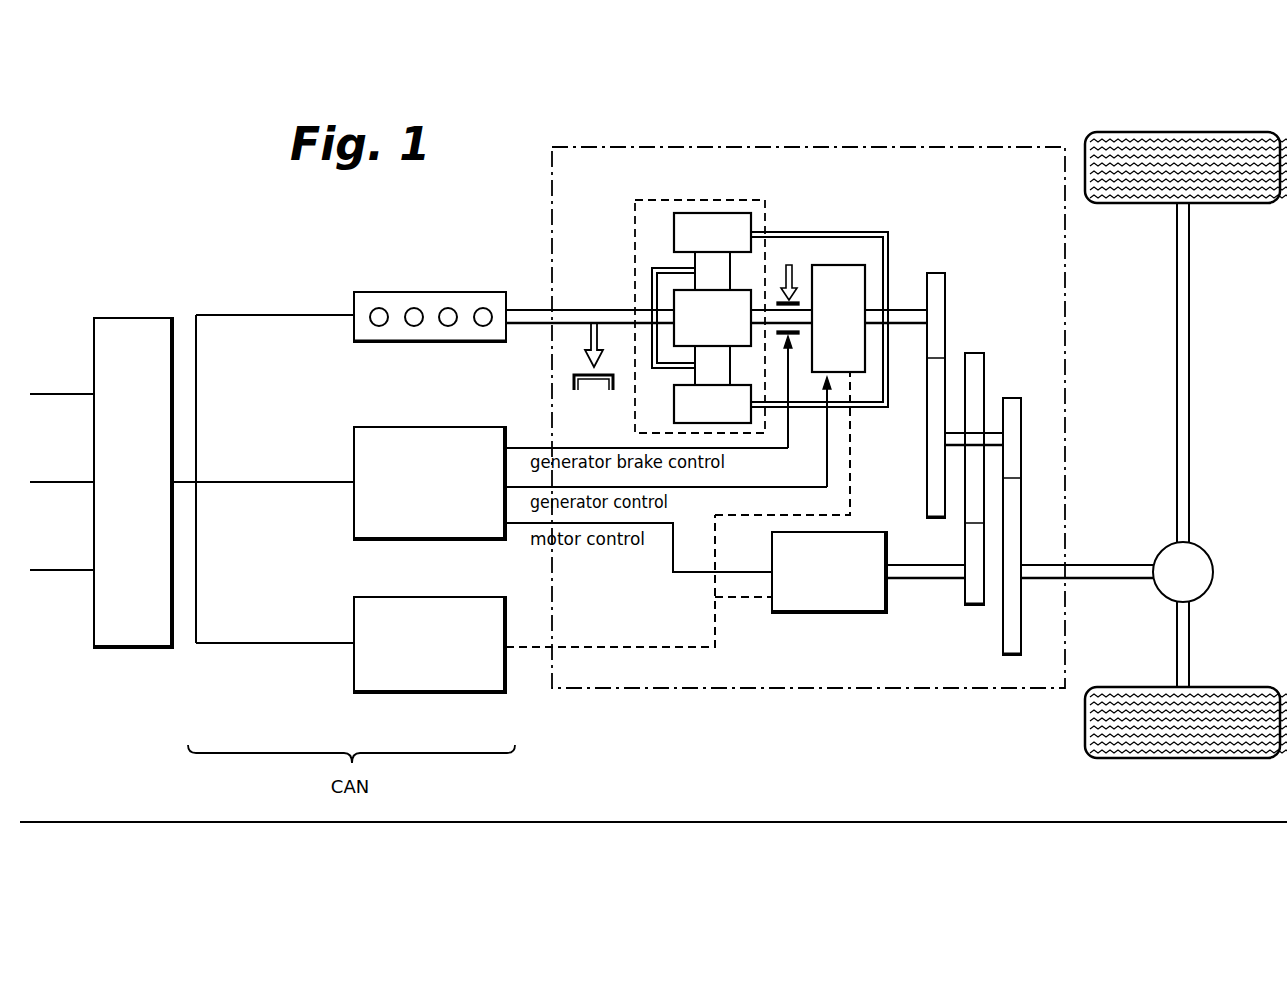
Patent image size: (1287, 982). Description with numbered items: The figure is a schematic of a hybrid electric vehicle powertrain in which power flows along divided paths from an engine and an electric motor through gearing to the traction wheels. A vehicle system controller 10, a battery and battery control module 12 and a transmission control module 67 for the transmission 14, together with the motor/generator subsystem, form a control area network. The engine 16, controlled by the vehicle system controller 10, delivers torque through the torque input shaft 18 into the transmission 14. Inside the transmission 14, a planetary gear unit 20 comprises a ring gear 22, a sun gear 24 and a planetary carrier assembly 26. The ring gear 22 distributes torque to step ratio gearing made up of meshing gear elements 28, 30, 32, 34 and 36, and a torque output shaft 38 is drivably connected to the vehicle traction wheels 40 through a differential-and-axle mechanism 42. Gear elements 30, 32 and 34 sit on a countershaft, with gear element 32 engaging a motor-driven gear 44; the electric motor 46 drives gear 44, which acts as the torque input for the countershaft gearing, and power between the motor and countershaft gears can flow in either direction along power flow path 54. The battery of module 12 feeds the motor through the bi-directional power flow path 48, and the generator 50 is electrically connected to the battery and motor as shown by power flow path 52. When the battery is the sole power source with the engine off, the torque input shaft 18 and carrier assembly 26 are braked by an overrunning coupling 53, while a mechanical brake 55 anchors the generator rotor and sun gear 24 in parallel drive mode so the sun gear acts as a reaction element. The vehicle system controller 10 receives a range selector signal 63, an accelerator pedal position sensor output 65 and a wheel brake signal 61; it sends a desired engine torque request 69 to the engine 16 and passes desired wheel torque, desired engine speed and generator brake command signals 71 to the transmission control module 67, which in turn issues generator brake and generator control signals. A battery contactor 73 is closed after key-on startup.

The vehicle system controller 10 is at (140, 318).
The battery and battery control module 12 is at (450, 693).
The transmission 14 is at (652, 690).
The engine 16 is at (483, 292).
The torque input shaft 18 is at (540, 327).
The planetary gear unit 20 is at (768, 215).
The ring gear 22 is at (674, 232).
The sun gear 24 is at (674, 300).
The planetary carrier assembly 26 is at (652, 280).
The gear element 28 is at (945, 294).
The gear element 30 is at (927, 470).
The gear element 32 is at (984, 372).
The gear element 34 is at (1021, 412).
The gear element 36 is at (1021, 515).
The torque output shaft 38 is at (1122, 580).
The vehicle traction wheels 40 is at (1220, 132).
The differential-and-axle mechanism 42 is at (1200, 572).
The motor-driven gear 44 is at (975, 607).
The electric motor 46 is at (833, 613).
The power flow path 48 is at (698, 645).
The generator 50 is at (865, 272).
The power flow path 52 is at (728, 515).
The overrunning coupling 53 is at (588, 338).
The power flow path 54 is at (738, 600).
The mechanical brake 55 is at (795, 273).
The wheel brake signal 61 is at (75, 574).
The transmission range selector signal 63 is at (75, 398).
The accelerator pedal position sensor output 65 is at (75, 486).
The transmission control module 67 is at (380, 427).
The desired engine torque request 69 is at (270, 318).
The desired wheel torque, desired engine speed and generator brake command signals 71 is at (270, 485).
The battery contactor 73 is at (270, 646).